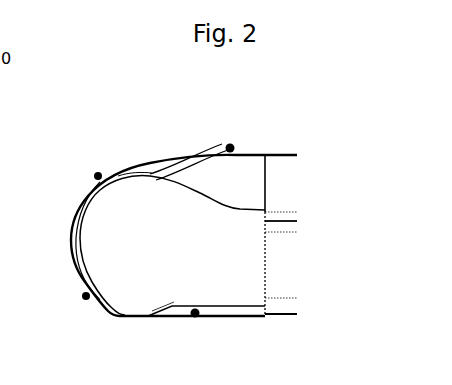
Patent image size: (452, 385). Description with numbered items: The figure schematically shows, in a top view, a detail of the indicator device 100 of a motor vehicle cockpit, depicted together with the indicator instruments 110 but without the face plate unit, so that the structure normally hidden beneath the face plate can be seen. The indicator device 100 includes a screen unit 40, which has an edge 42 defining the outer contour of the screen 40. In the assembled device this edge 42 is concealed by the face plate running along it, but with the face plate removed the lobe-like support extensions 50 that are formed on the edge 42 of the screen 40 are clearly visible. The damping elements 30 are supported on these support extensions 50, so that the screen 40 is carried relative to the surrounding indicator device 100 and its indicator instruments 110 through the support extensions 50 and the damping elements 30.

The indicator device 100 is at (318, 90).
The indicator instruments 110 is at (314, 168).
The screen unit 40 is at (88, 242).
The damping elements 30 is at (198, 187).
The support extensions 50 is at (212, 138).
The edge 42 is at (125, 176).